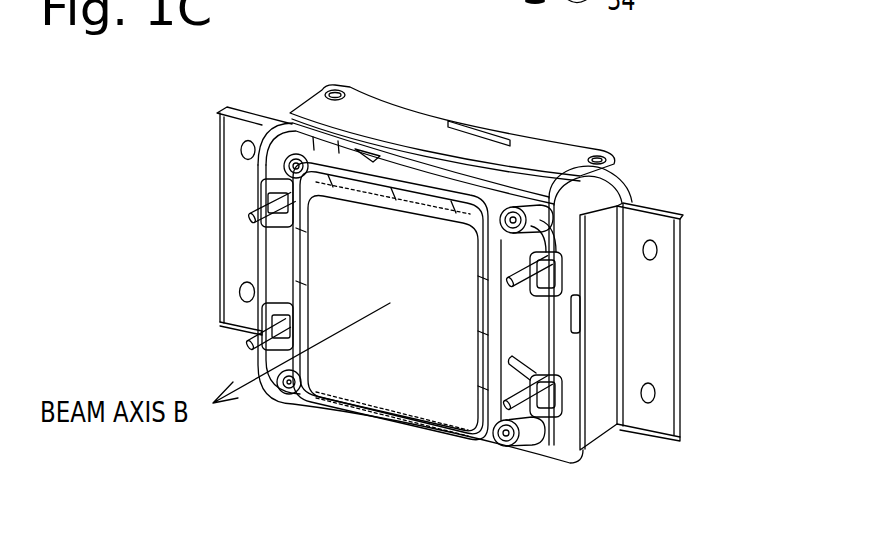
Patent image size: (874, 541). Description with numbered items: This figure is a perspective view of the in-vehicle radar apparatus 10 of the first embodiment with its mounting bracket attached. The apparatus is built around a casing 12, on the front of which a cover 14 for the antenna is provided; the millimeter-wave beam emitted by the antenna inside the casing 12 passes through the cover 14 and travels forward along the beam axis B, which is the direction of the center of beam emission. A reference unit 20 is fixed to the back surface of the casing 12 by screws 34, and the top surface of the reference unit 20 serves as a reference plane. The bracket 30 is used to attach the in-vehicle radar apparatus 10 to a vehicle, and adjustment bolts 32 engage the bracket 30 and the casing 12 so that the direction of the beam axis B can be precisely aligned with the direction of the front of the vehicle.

The in-vehicle radar apparatus 10 is at (762, 122).
The casing 12 is at (583, 192).
The cover 14 is at (450, 370).
The reference unit 20 is at (480, 127).
The bracket 30 is at (238, 110).
The adjustment bolts 32 is at (250, 213).
The screws 34 is at (503, 452).